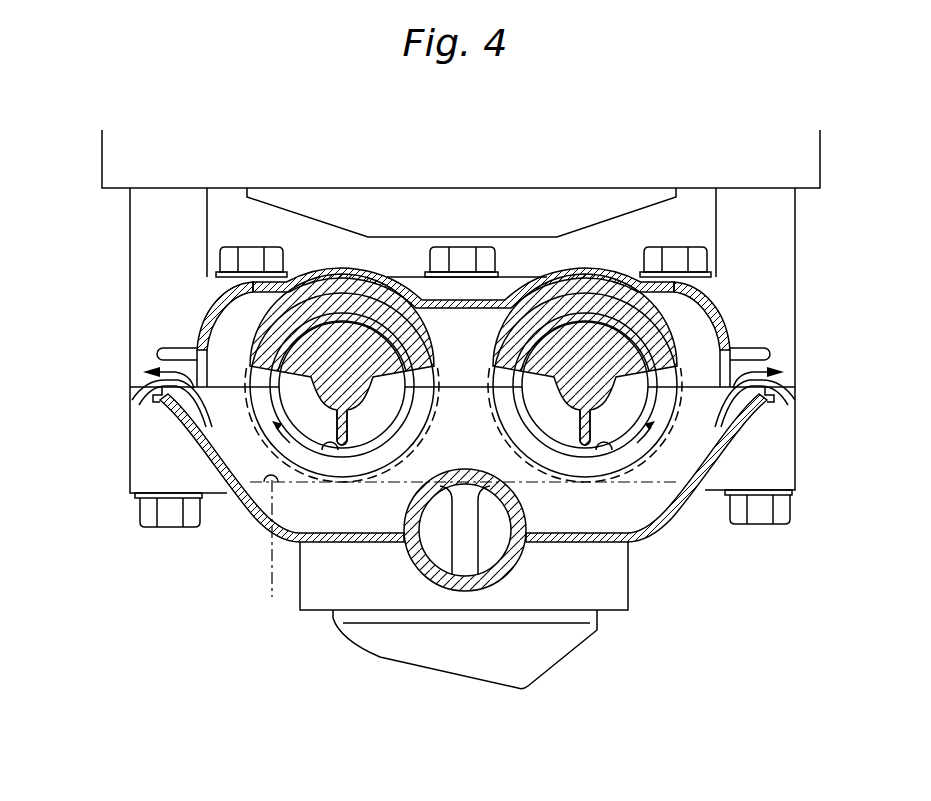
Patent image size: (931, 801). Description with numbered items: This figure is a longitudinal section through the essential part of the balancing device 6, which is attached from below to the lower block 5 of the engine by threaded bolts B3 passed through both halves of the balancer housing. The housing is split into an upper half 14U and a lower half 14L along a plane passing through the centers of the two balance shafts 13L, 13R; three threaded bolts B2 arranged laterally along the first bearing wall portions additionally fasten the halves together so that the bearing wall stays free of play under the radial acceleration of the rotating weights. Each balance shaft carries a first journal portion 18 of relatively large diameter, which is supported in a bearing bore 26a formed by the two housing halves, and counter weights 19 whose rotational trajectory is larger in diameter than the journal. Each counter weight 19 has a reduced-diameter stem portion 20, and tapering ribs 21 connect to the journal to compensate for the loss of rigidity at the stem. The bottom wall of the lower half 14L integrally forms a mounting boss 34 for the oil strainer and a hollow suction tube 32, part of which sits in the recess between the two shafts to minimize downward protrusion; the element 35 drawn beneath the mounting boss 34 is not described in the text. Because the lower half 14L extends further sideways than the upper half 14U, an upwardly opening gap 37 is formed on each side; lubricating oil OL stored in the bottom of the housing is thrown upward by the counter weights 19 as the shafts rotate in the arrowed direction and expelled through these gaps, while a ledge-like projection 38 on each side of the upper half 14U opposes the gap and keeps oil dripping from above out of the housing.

The lower block 5 is at (798, 166).
The upper half of the balancer housing 14U is at (775, 255).
The lower half of the balancer housing 14L is at (788, 462).
The balancing device 6 is at (240, 532).
The ledge-like projection 38 is at (182, 347).
The gap 37 is at (772, 388).
The threaded bolt B2 is at (246, 256).
The threaded bolt B3 is at (170, 520).
The balance shaft 13L is at (337, 283).
The balance shaft 13R is at (590, 283).
The counter weight 19 is at (371, 305).
The stem portion 20 is at (560, 392).
The tapering rib 21 is at (581, 432).
The first journal portion 18 is at (272, 405).
The bearing bore 26a is at (328, 450).
The lubricating oil OL is at (465, 551).
The suction tube 32 is at (508, 567).
The mounting boss 34 is at (618, 582).
The oil strainer 35 is at (457, 555).